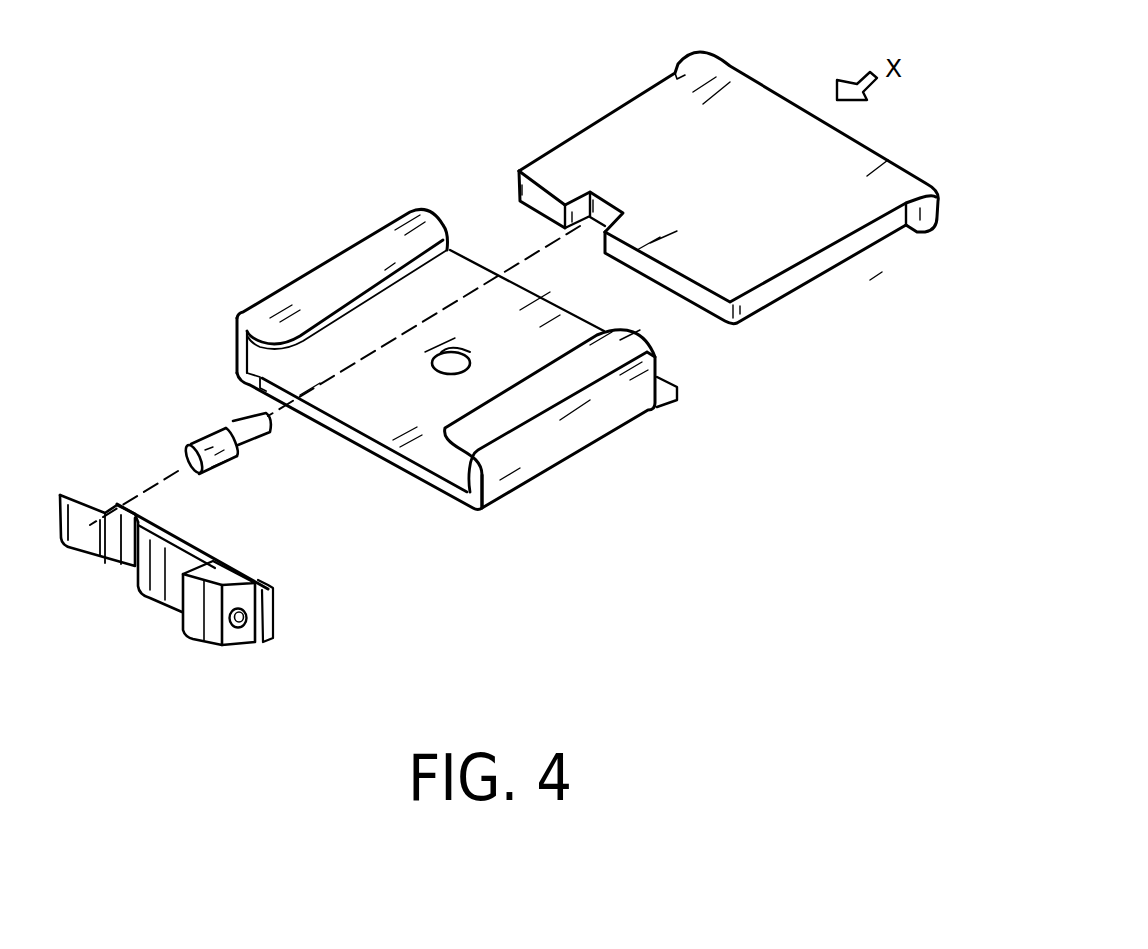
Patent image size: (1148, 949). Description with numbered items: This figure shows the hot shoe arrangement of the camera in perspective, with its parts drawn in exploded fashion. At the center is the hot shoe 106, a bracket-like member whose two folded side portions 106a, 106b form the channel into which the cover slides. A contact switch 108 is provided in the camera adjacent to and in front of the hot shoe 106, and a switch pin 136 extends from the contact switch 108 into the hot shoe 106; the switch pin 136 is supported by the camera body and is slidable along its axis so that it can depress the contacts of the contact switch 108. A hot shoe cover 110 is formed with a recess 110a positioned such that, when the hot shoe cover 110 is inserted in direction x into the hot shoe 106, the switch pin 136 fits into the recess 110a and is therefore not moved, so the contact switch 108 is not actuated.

The hot shoe cover 110 is at (770, 91).
The recess 110a is at (618, 215).
The hot shoe 106 is at (613, 430).
The right flange of clip bracket 106a is at (532, 418).
The left flange of clip bracket 106b is at (310, 282).
The switch pin 136 is at (252, 437).
The contact switch 108 is at (206, 633).